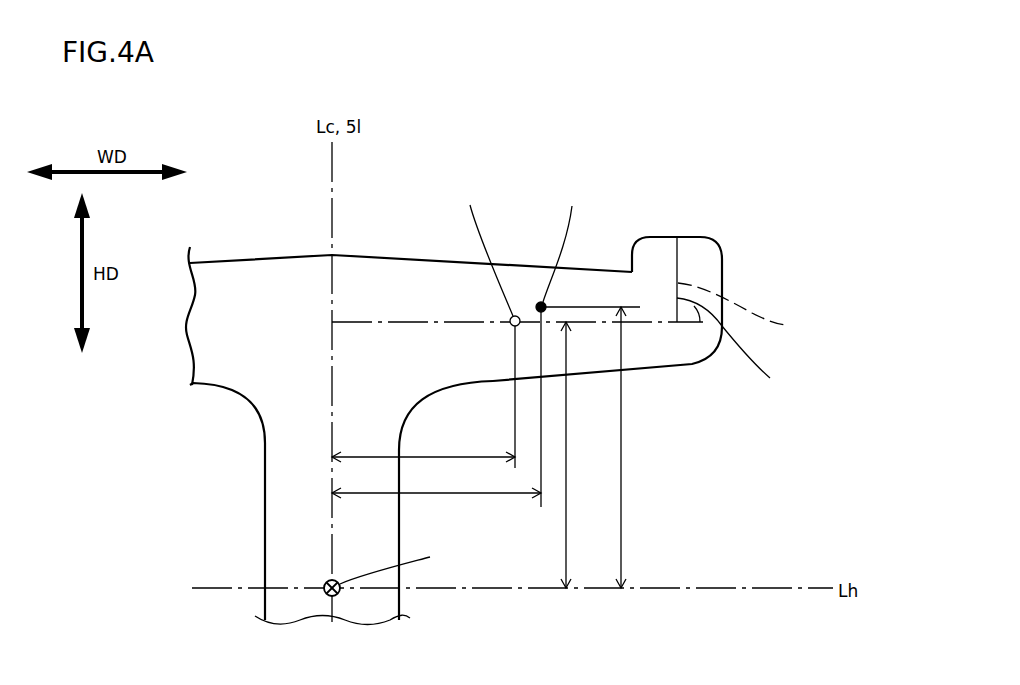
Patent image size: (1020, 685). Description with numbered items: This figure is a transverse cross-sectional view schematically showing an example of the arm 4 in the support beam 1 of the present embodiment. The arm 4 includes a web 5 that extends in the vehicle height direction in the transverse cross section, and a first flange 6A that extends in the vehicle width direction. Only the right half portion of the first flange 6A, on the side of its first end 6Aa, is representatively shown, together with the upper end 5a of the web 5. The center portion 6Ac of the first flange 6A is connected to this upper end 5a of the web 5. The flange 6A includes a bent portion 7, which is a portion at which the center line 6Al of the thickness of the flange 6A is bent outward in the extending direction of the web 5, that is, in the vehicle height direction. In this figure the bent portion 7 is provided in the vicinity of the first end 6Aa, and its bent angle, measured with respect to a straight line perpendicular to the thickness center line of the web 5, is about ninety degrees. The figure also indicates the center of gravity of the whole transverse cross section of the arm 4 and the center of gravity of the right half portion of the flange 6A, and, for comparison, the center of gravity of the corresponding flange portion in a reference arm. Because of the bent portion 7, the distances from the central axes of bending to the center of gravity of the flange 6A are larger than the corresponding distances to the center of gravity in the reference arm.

The support beam 1 is at (161, 112).
The arm 4 is at (779, 190).
The web 5 is at (258, 521).
The upper end 5a is at (268, 415).
The first flange 6A is at (725, 260).
The first end 6Aa is at (670, 237).
The center portion 6Ac is at (337, 265).
The center line of the thickness of the flange 6Al is at (750, 310).
The bent portion 7 is at (680, 326).